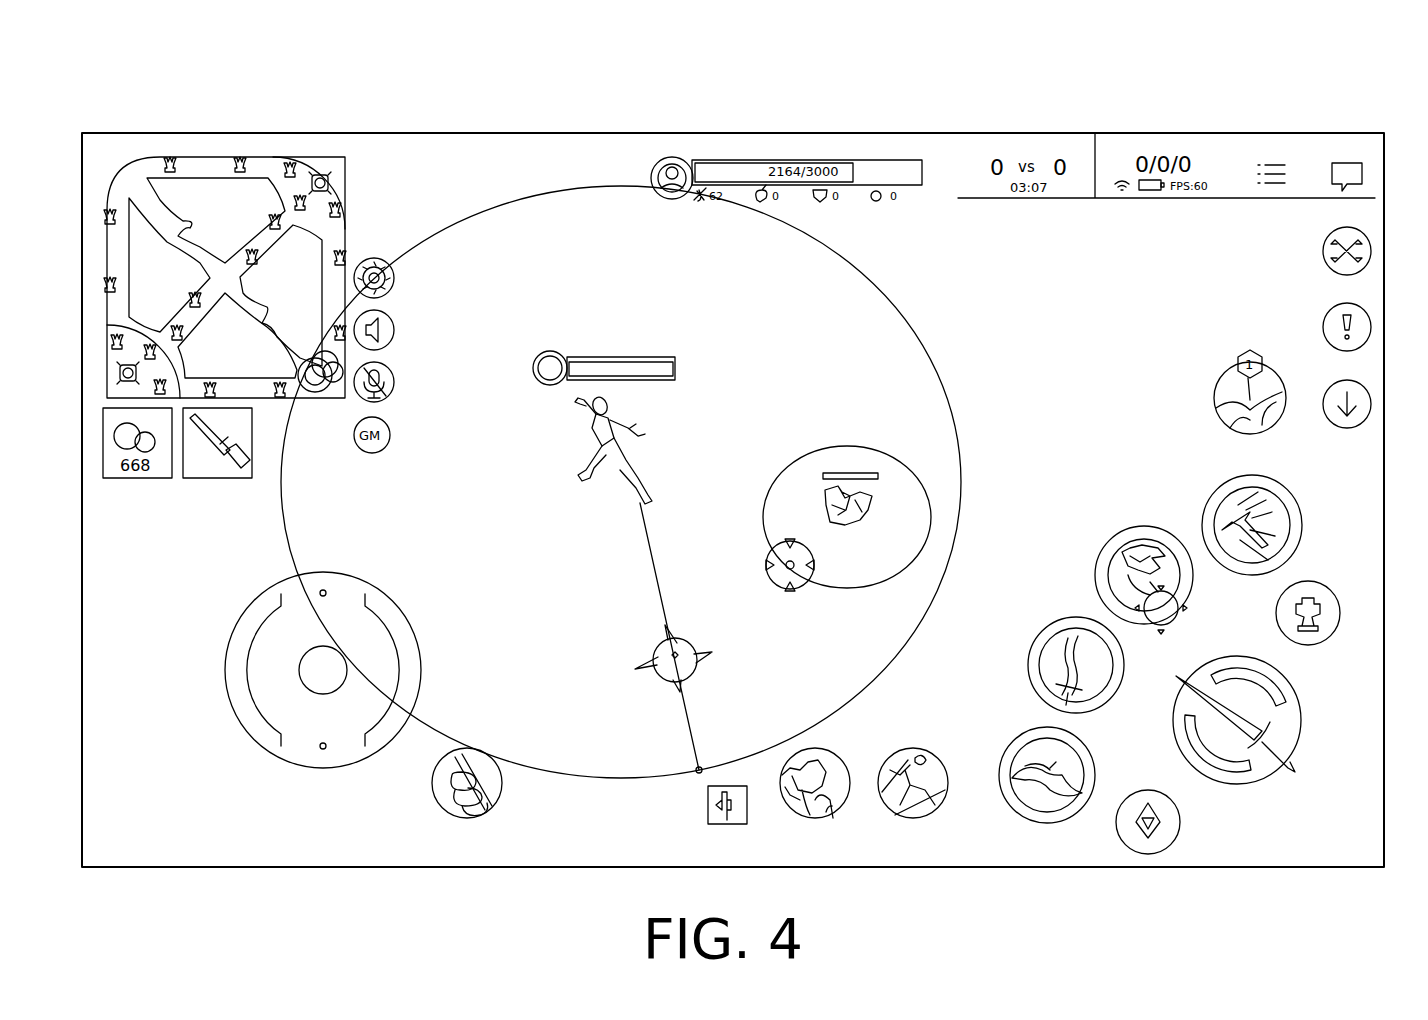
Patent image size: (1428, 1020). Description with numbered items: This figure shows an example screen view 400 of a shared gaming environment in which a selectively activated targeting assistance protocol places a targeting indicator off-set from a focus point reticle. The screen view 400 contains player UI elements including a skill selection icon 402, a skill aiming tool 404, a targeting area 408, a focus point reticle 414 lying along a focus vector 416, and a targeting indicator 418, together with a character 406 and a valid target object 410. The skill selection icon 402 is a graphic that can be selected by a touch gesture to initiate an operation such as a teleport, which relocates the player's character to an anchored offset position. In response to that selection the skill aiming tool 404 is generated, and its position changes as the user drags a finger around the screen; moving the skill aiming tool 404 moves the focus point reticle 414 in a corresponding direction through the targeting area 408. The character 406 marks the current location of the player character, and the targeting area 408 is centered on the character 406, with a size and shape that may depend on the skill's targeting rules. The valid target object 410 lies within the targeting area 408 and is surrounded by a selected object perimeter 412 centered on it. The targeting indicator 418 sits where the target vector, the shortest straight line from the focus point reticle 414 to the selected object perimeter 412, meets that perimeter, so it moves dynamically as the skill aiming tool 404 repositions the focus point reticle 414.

The screen view 400 is at (1334, 80).
The skill selection icon 402 is at (1140, 526).
The skill aiming tool 404 is at (1151, 586).
The character 406 is at (627, 408).
The targeting area 408 is at (930, 358).
The valid target object 410 is at (830, 512).
The selected object perimeter 412 is at (840, 446).
The focus point reticle 414 is at (688, 642).
The focus vector 416 is at (653, 565).
The targeting indicator 418 is at (777, 587).